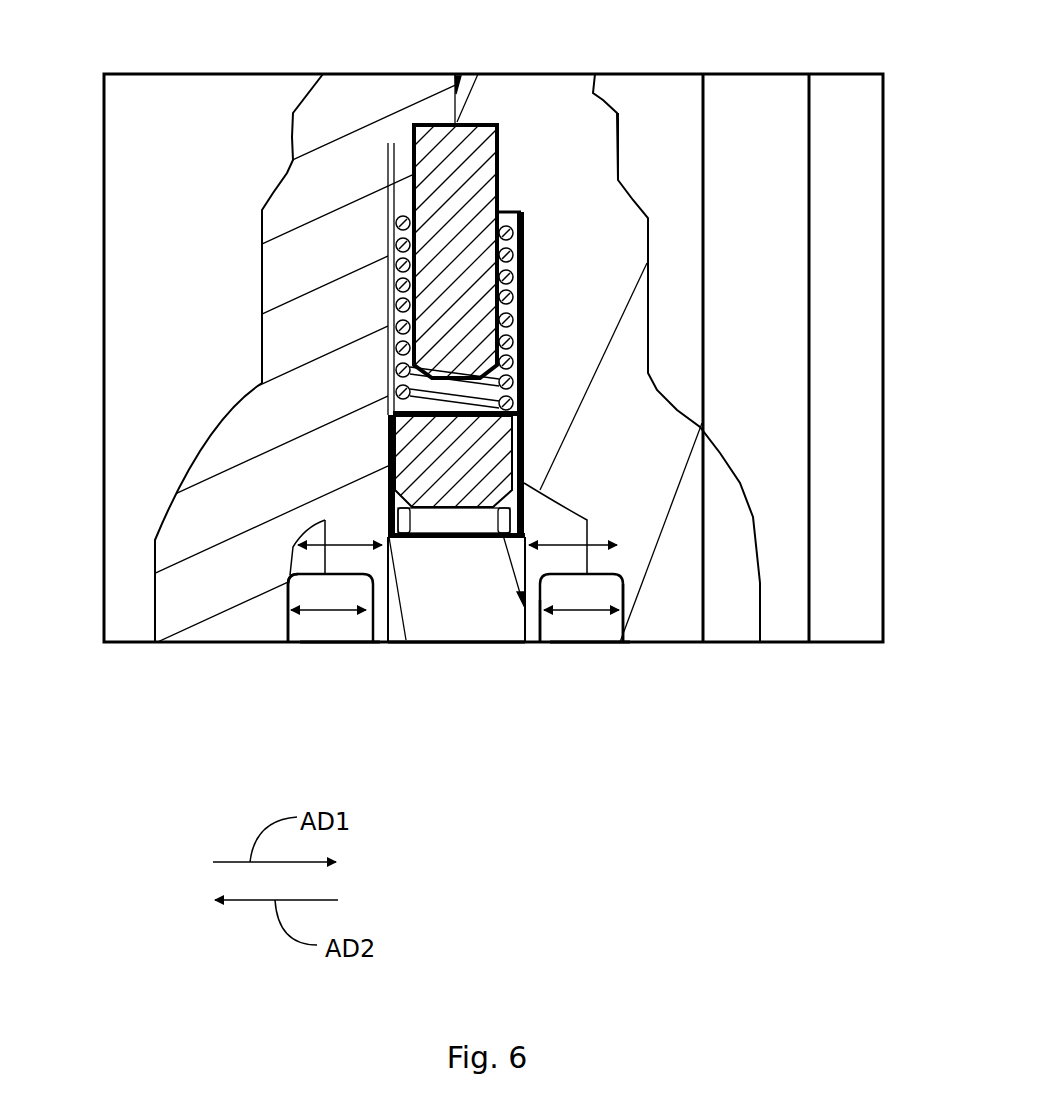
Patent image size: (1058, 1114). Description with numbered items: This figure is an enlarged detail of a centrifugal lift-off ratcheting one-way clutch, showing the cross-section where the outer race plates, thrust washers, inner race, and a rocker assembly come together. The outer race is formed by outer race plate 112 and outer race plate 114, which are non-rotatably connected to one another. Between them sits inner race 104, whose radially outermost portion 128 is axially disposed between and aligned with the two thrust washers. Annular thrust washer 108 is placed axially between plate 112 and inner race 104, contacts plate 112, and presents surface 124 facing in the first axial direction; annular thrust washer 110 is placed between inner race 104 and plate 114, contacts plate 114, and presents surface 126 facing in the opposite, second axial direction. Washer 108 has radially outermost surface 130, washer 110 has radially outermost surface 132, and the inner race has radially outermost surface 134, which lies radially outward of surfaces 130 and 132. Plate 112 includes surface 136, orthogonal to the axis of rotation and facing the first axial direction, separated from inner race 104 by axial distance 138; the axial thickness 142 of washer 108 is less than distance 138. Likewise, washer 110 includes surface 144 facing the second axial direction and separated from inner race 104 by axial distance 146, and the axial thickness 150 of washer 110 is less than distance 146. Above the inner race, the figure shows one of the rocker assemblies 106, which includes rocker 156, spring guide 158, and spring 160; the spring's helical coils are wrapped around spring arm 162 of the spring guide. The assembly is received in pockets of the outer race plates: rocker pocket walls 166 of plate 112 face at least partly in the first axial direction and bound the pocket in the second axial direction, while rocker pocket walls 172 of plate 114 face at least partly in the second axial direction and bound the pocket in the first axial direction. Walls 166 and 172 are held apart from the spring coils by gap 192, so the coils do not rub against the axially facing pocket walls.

The inner race 104 is at (441, 645).
The rocker assemblies 106 is at (532, 215).
The annular thrust washer 108 is at (340, 644).
The annular thrust washer 110 is at (592, 646).
The outer race plate 112 is at (290, 136).
The outer race plate 114 is at (620, 142).
The surface 124 is at (370, 612).
The surface 126 is at (543, 613).
The radially outermost portion 128 is at (430, 587).
The radially outermost surface 130 is at (290, 577).
The radially outermost surface 132 is at (557, 633).
The radially outermost surface 134 is at (463, 537).
The surface 136 is at (287, 593).
The axial distance 138 is at (345, 543).
The axial thickness 142 is at (333, 608).
The surface 144 is at (622, 598).
The axial distance 146 is at (598, 543).
The axial thickness 150 is at (600, 615).
The rocker 156 is at (483, 445).
The spring guide 158 is at (445, 122).
The spring 160 is at (395, 266).
The spring arm 162 is at (483, 262).
The rocker pocket walls 166 is at (395, 310).
The rocker pocket walls 172 is at (523, 280).
The gap 192 is at (413, 163).